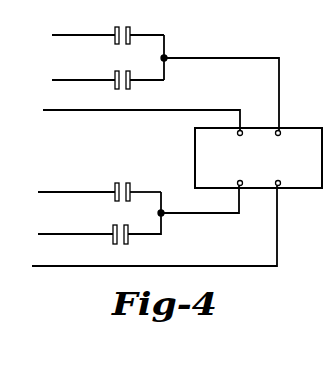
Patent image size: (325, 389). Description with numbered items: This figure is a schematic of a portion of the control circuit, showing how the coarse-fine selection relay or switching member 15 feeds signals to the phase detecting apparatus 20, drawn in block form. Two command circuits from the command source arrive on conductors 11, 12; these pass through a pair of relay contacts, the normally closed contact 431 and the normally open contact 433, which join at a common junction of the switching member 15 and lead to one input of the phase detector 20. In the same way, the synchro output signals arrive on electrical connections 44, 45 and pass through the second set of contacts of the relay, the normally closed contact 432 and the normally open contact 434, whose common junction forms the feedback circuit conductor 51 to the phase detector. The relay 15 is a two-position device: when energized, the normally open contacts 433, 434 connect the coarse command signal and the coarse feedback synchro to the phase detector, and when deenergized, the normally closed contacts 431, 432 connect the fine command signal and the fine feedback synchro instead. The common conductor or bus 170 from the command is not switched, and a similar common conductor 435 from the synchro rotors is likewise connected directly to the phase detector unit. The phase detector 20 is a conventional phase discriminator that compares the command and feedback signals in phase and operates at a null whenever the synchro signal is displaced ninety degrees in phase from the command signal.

The conductor 11 is at (69, 35).
The conductor 12 is at (69, 80).
The normally closed contact 431 is at (125, 27).
The normally open contact 433 is at (131, 92).
The relay or switching member 15 is at (180, 46).
The phase detecting apparatus 20 is at (313, 127).
The common conductor or bus 170 is at (110, 111).
The electrical connection 44 is at (70, 191).
The electrical connection 45 is at (50, 233).
The normally closed contact 432 is at (125, 182).
The normally open contact 434 is at (120, 225).
The conductor 51 is at (212, 214).
The common conductor 435 is at (96, 265).